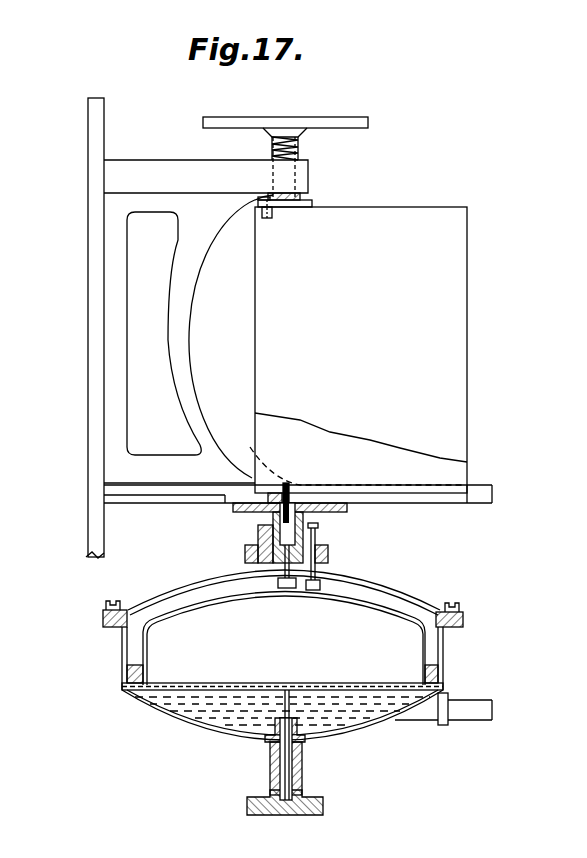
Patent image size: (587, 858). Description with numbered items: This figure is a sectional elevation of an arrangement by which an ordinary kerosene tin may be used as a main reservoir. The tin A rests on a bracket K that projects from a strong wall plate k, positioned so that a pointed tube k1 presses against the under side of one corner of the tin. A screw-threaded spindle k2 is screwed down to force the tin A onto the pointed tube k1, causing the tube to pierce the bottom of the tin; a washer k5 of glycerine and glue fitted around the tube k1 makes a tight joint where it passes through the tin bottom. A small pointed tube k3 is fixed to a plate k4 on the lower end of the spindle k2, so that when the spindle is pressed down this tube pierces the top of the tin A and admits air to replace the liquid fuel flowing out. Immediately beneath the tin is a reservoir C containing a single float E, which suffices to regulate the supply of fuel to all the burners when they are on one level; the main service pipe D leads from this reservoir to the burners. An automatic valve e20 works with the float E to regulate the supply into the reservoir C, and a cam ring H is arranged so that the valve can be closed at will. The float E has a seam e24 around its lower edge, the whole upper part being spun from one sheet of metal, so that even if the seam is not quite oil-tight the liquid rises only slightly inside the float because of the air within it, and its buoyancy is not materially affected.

The wall plate k is at (80, 352).
The pointed tube k1 is at (262, 488).
The screw-threaded spindle k2 is at (285, 158).
The small pointed tube k3 is at (262, 218).
The plate k4 is at (313, 207).
The washer k5 is at (290, 490).
The tin A is at (358, 350).
The bracket K is at (298, 506).
The automatic valve e20 is at (262, 535).
The cam ring H is at (318, 528).
The reservoir C is at (352, 580).
The float E is at (282, 639).
The seam e24 is at (144, 684).
The main service pipe D is at (466, 700).